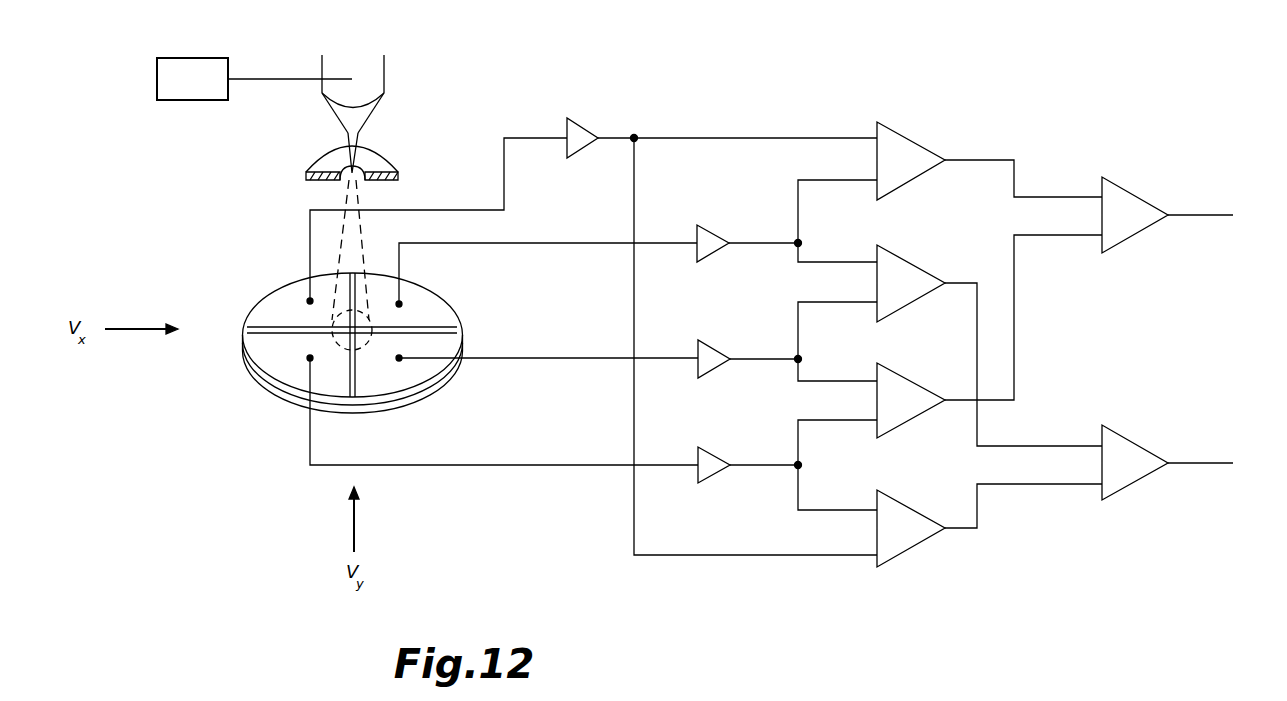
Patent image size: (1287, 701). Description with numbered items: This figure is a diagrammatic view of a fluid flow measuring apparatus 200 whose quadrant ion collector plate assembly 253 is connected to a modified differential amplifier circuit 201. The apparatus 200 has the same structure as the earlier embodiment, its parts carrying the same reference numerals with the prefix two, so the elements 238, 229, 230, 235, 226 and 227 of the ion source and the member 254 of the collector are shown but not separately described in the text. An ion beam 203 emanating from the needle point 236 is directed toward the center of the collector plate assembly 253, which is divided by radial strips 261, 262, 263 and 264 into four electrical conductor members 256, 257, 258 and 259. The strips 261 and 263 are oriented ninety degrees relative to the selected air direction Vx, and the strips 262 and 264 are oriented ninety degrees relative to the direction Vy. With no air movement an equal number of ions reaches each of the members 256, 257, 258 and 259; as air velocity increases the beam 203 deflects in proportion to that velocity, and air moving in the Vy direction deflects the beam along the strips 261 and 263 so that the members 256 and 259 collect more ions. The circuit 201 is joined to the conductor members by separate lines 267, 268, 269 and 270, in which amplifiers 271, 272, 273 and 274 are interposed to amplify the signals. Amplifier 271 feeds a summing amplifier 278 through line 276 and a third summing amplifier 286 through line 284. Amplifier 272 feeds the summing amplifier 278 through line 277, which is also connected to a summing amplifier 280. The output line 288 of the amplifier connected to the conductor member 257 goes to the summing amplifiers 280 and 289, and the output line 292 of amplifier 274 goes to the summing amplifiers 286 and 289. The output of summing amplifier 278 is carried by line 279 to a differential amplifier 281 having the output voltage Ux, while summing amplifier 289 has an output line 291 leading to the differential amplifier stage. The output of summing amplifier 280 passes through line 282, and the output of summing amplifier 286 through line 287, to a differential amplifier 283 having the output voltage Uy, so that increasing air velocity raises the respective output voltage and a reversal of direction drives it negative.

The high voltage source 238 is at (190, 58).
The emitter holder 229 is at (385, 68).
The conical electrode 230 is at (327, 90).
The emitter tip 235 is at (360, 134).
The extractor electrode 226 is at (320, 164).
The aperture 227 is at (356, 172).
The needle point 236 is at (345, 181).
The ion beam 203 is at (358, 193).
The fluid flow measuring apparatus 200 is at (244, 236).
The ion collector plate assembly 253 is at (298, 417).
The detector disc 254 is at (372, 410).
The electrical conductor member 256 is at (416, 294).
The electrical conductor member 257 is at (408, 378).
The electrical conductor member 258 is at (288, 380).
The electrical conductor member 259 is at (280, 303).
The radial strip 261 is at (358, 278).
The radial strip 262 is at (460, 328).
The radial strip 263 is at (350, 394).
The radial strip 264 is at (262, 355).
The line 267 is at (486, 210).
The line 268 is at (510, 244).
The line 269 is at (510, 360).
The line 270 is at (398, 467).
The amplifier 271 is at (582, 125).
The amplifier 272 is at (716, 237).
The amplifier 273 is at (716, 349).
The amplifier 274 is at (716, 455).
The differential amplifier circuit 201 is at (804, 122).
The line 276 is at (742, 136).
The line 277 is at (816, 180).
The summing amplifier 278 is at (908, 130).
The line 279 is at (1016, 170).
The summing amplifier 280 is at (908, 262).
The differential amplifier 281 is at (1132, 194).
The line 282 is at (976, 333).
The differential amplifier 283 is at (1140, 480).
The line 284 is at (700, 556).
The third summing amplifier 286 is at (910, 552).
The line 287 is at (1014, 484).
The output line 288 is at (806, 334).
The summing amplifier 289 is at (908, 384).
The output line 291 is at (1018, 320).
The output line 292 is at (800, 448).